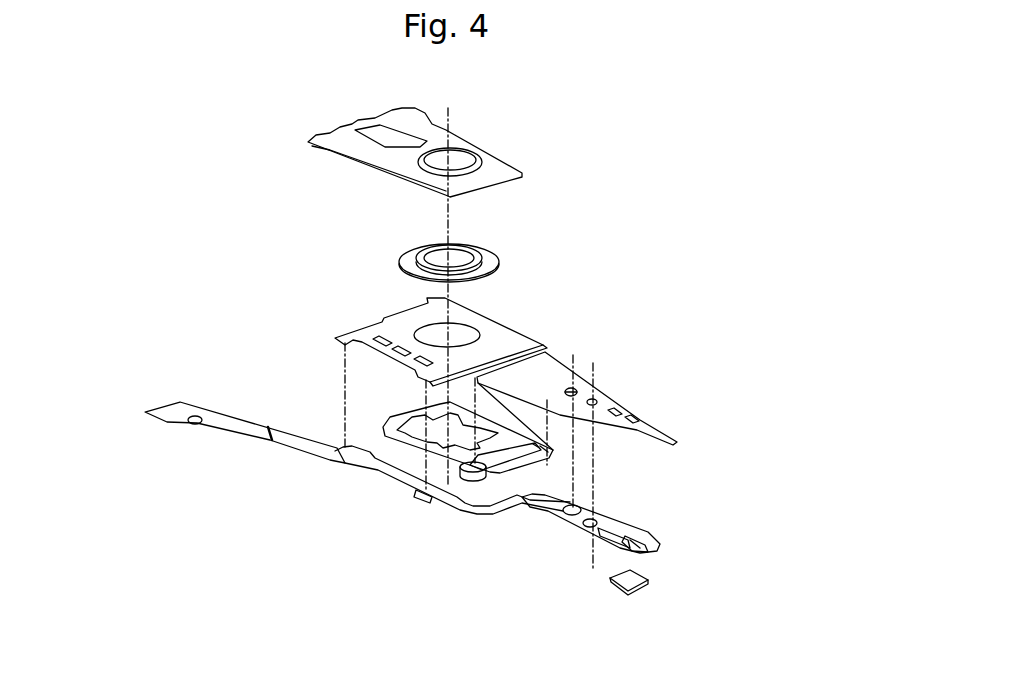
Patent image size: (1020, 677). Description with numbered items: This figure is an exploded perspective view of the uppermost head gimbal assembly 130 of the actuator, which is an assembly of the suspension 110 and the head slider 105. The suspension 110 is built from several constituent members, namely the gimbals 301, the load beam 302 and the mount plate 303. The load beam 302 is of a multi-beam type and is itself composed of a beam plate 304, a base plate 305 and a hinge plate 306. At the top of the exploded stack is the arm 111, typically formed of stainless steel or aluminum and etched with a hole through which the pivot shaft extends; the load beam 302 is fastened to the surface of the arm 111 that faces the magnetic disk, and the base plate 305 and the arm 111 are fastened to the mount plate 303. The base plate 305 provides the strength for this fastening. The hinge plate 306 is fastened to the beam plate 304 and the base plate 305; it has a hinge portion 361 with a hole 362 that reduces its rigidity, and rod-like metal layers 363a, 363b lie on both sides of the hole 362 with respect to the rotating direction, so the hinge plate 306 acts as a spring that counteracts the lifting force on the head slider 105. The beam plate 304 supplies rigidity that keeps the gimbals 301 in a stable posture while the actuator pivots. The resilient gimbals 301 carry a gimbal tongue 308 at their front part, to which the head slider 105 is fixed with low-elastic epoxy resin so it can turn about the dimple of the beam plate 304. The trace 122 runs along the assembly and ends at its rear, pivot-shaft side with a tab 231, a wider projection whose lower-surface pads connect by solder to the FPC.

The arm 111 is at (480, 152).
The mount plate 303 is at (480, 253).
The base plate 305 is at (483, 313).
The beam plate 304 is at (605, 400).
The hinge plate 306 is at (387, 410).
The rod-like metal layer 363a is at (533, 442).
The rod-like metal layer 363b is at (480, 463).
The hole 362 is at (522, 452).
The hinge portion 361 is at (470, 481).
The tab 231 is at (170, 405).
The trace 122 is at (395, 483).
The gimbals 301 is at (587, 533).
The gimbal tongue 308 is at (640, 532).
The head slider 105 is at (613, 582).
The head gimbal assembly 130 is at (602, 177).
The suspension 110 is at (585, 281).
The load beam 302 is at (557, 343).